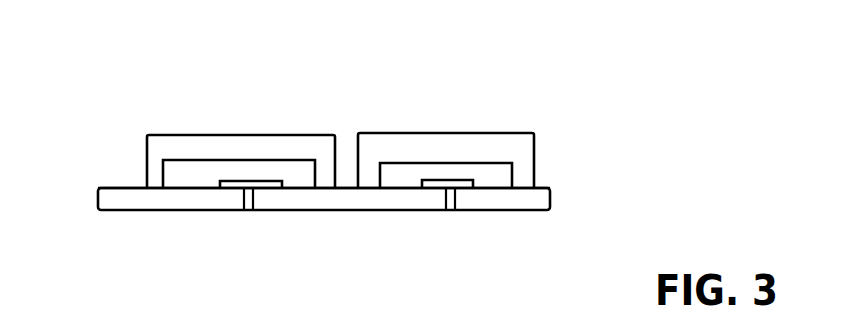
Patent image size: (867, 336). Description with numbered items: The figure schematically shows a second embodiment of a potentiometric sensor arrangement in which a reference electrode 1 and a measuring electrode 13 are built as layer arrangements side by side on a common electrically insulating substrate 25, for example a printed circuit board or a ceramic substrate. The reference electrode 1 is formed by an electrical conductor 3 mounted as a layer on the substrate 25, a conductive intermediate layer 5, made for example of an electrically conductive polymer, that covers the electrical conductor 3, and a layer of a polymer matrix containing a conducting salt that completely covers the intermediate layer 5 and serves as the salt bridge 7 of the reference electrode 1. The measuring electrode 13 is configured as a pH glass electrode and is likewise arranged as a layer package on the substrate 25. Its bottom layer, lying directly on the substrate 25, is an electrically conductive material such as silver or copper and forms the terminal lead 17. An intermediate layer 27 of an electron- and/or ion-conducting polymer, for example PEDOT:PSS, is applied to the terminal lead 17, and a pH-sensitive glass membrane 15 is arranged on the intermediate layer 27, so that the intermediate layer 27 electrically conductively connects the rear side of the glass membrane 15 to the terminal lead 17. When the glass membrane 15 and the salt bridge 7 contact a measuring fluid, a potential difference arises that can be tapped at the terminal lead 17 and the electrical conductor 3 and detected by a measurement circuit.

The reference electrode 1 is at (497, 119).
The electrical conductor 3 is at (482, 192).
The conductive intermediate layer 5 is at (508, 176).
The salt bridge 7 is at (450, 138).
The measuring electrode 13 is at (340, 148).
The pH-sensitive glass membrane 15 is at (222, 148).
The terminal lead 17 is at (230, 190).
The electrically insulating substrate 25 is at (548, 198).
The intermediate layer 27 is at (172, 172).